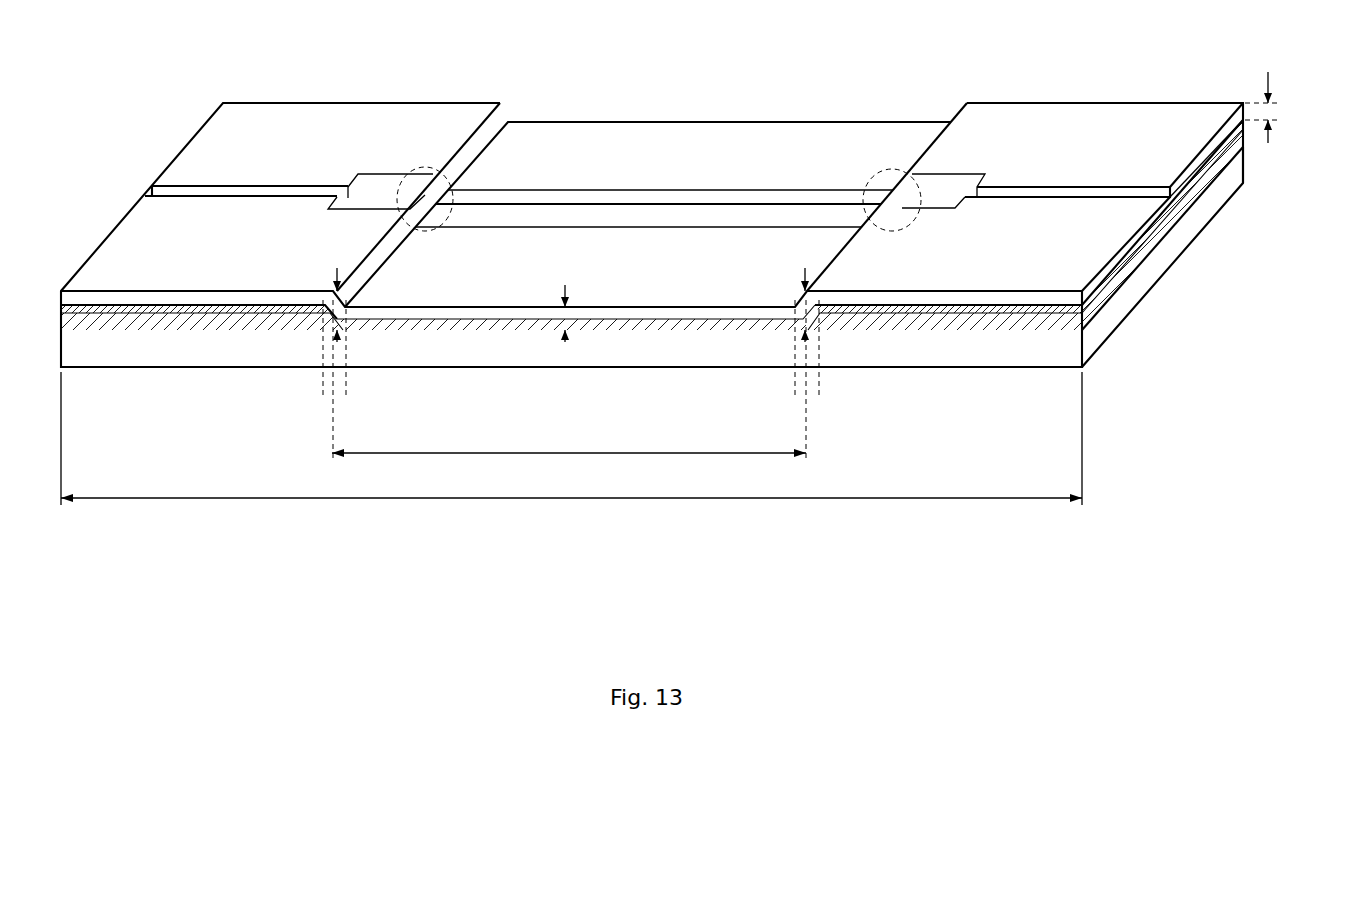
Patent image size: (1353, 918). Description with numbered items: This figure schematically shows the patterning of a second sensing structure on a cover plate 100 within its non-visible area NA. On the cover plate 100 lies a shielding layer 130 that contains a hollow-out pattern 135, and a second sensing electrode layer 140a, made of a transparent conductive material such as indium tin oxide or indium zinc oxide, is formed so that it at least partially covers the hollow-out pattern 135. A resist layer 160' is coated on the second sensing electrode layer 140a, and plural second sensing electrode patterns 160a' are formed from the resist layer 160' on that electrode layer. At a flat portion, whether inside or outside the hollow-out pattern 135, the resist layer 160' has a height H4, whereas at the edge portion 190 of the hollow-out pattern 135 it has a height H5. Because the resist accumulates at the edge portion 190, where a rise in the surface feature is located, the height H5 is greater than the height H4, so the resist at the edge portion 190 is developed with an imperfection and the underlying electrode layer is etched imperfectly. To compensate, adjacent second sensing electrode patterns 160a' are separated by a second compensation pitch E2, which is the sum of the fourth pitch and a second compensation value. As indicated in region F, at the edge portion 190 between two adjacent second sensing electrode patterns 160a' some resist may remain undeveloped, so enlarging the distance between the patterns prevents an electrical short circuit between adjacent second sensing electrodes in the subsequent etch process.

The cover plate 100 is at (1094, 340).
The shielding layer 130 is at (1150, 260).
The second sensing electrode layer 140a is at (622, 217).
The resist layer 160' is at (687, 216).
The second sensing electrode patterns 160a' is at (652, 181).
The edge portion 190 is at (297, 385).
The hollow-out pattern 135 is at (569, 466).
The non-visible area NA is at (571, 452).
The height of resist layer at flat portion H4 is at (556, 318).
The height of resist layer at edge portion H5 is at (335, 296).
The region F is at (442, 172).
The second compensation pitch E2 is at (428, 218).